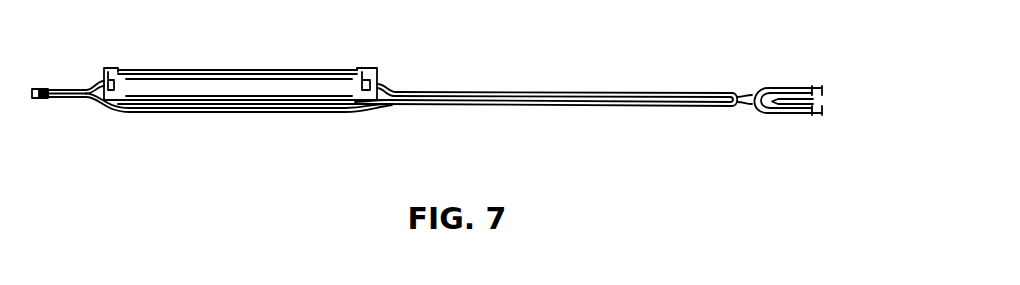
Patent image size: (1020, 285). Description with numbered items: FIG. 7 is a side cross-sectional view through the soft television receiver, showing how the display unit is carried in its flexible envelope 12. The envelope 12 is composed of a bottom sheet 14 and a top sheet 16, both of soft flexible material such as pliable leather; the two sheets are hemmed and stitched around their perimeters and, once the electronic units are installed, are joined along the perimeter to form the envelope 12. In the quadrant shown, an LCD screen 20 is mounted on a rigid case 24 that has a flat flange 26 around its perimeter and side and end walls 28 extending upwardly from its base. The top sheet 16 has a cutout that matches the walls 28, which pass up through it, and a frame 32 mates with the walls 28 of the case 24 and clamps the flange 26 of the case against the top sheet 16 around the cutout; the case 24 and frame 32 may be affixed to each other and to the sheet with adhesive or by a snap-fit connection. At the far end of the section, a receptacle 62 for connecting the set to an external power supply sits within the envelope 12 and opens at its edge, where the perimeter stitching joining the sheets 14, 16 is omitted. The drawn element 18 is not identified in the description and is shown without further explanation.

The envelope 12 is at (561, 97).
The bottom sheet 14 is at (663, 108).
The top sheet 16 is at (479, 91).
The conduit tube 18 is at (268, 109).
The LCD screen 20 is at (210, 69).
The rigid case 24 is at (187, 90).
The flat flange 26 is at (376, 107).
The side and end walls 28 is at (380, 68).
The frame 32 is at (112, 66).
The receptacle 62 is at (813, 102).